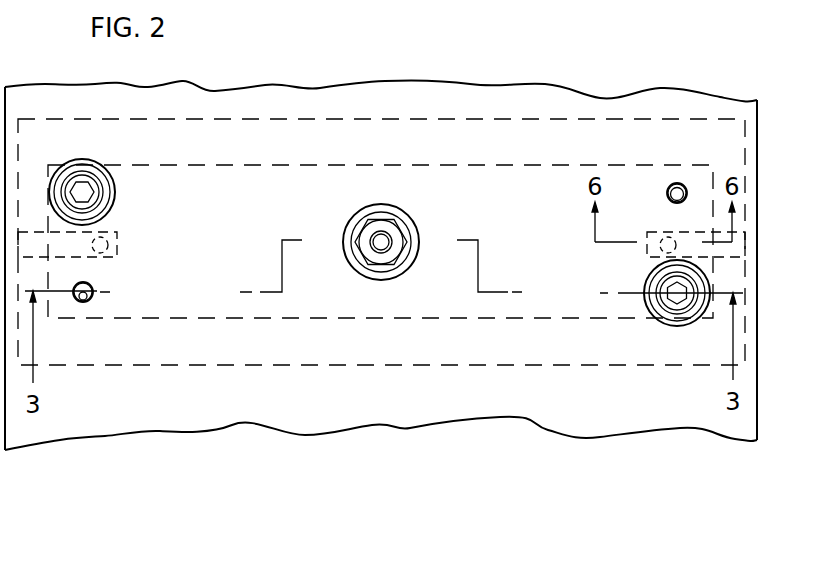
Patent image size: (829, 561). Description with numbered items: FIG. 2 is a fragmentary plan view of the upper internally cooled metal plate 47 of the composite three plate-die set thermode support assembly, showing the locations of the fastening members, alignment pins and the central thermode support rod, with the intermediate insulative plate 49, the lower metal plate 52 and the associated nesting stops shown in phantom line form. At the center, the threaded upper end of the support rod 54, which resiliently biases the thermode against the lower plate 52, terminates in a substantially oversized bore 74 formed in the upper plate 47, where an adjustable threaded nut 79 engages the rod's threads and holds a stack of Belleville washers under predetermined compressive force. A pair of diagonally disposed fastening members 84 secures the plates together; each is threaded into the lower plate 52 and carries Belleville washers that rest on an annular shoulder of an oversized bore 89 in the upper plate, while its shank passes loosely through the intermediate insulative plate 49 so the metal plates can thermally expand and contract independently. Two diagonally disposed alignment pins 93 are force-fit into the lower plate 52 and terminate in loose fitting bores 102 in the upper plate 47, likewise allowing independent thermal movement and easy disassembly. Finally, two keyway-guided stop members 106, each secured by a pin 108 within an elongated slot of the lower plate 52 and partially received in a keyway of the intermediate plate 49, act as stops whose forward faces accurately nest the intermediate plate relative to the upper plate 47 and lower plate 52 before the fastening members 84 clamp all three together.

The upper internally cooled metal plate 47 is at (607, 97).
The intermediate insulative plate 49 is at (472, 366).
The lower metal plate 52 is at (388, 319).
The support rod 54 is at (393, 248).
The oversized bore 74 is at (412, 222).
The threaded nut 79 is at (368, 252).
The fastening member 84 is at (95, 190).
The oversized bore 89 is at (90, 159).
The alignment pin 93 is at (90, 293).
The loose fitting bore 102 is at (86, 302).
The stop member 106 is at (101, 257).
The pin 108 is at (110, 236).